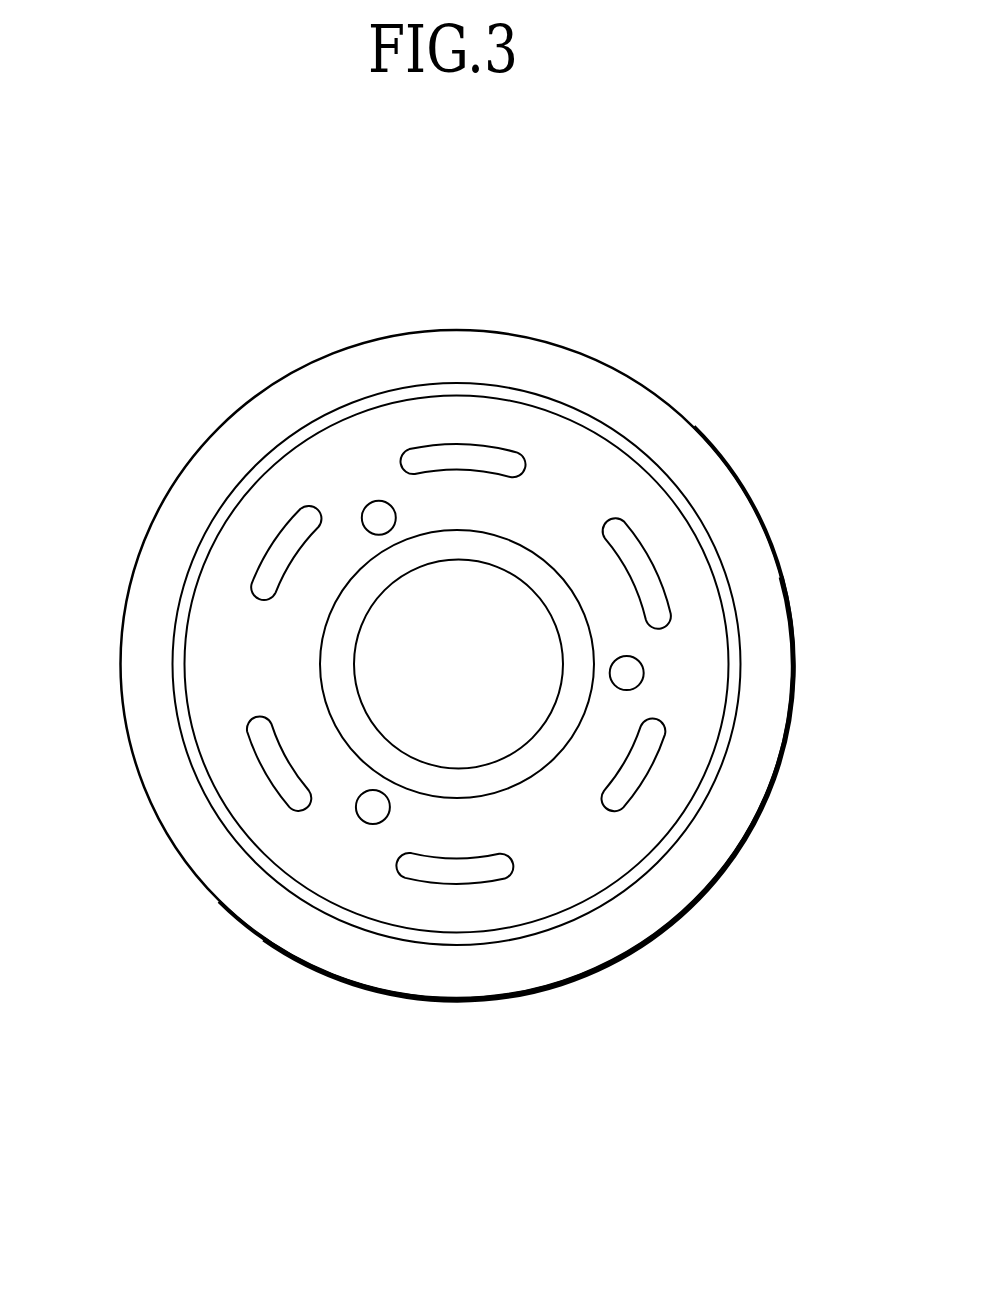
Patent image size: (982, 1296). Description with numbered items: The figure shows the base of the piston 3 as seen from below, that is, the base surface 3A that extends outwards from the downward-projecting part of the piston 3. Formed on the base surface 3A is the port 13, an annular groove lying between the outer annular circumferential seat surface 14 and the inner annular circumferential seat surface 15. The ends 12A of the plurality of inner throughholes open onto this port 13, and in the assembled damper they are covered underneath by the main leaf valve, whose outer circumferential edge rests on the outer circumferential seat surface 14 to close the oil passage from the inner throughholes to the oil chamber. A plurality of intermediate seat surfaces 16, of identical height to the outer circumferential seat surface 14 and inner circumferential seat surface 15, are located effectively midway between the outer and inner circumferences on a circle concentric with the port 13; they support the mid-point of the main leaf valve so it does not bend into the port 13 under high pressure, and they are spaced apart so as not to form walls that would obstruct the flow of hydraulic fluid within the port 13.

The piston 3 is at (718, 458).
The base surface 3A is at (562, 463).
The ends of the inner throughholes 12A is at (373, 500).
The port 13 is at (243, 678).
The outer annular circumferential seat surface 14 is at (347, 925).
The inner annular circumferential seat surface 15 is at (348, 753).
The intermediate seat surfaces 16 is at (658, 768).